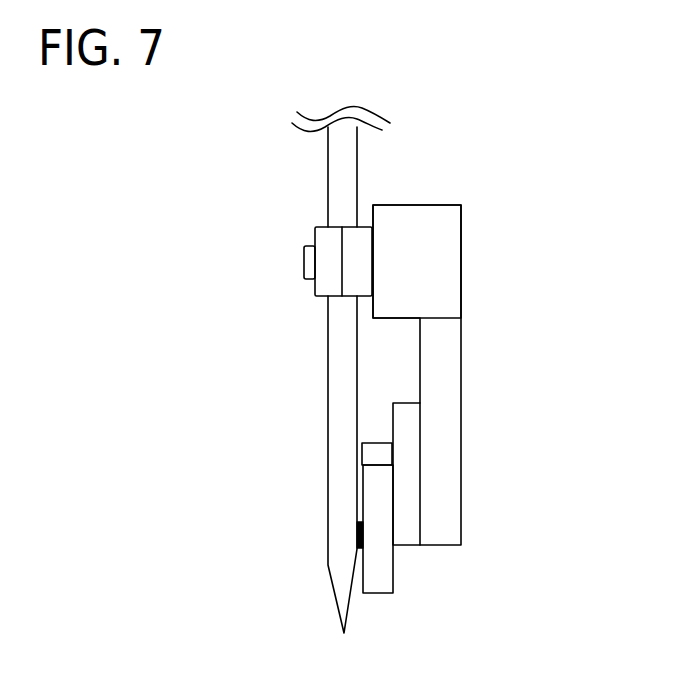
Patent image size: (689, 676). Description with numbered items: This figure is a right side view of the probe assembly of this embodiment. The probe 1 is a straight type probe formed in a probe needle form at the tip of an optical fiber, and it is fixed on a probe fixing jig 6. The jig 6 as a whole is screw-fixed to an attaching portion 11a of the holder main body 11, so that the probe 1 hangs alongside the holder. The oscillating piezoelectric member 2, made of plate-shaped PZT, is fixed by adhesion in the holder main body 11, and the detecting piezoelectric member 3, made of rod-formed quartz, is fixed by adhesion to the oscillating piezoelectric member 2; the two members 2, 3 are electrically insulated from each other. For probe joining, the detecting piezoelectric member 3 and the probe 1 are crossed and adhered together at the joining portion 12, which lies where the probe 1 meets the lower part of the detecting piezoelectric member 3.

The probe 1 is at (340, 372).
The probe fixing jig 6 is at (330, 247).
The holder main body 11 is at (492, 347).
The attaching portion 11a is at (392, 243).
The oscillating piezoelectric member 2 is at (409, 461).
The detecting piezoelectric member 3 is at (375, 495).
The joining portion 12 is at (363, 537).